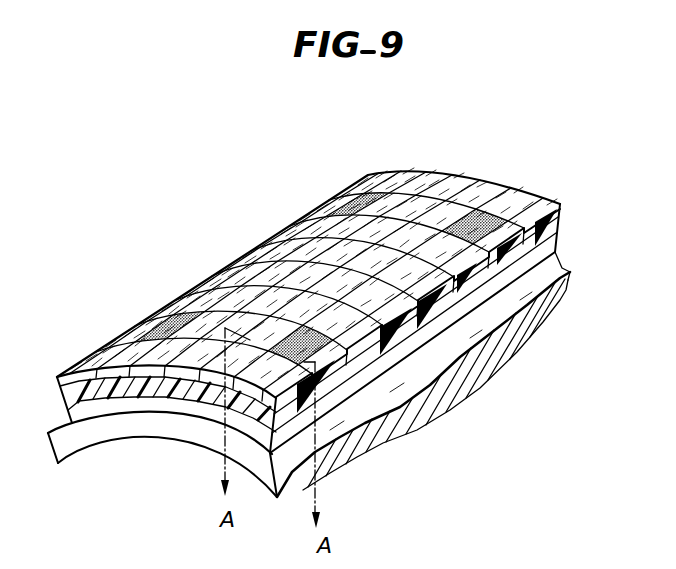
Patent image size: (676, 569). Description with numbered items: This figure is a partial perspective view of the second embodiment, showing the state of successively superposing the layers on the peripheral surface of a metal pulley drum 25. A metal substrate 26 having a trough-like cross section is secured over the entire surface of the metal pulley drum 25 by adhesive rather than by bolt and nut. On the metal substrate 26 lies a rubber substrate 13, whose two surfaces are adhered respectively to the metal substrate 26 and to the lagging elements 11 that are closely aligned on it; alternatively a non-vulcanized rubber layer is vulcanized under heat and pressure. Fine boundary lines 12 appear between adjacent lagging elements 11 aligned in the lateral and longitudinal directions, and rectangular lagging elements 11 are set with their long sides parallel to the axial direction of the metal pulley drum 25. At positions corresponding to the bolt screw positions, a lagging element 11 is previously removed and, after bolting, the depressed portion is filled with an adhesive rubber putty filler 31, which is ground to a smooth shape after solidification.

The lagging element 11 is at (270, 282).
The fine boundary lines 12 is at (456, 180).
The rubber substrate 13 is at (126, 380).
The metal pulley drum 25 is at (467, 330).
The metal substrate 26 is at (177, 405).
The filler 31 is at (337, 190).